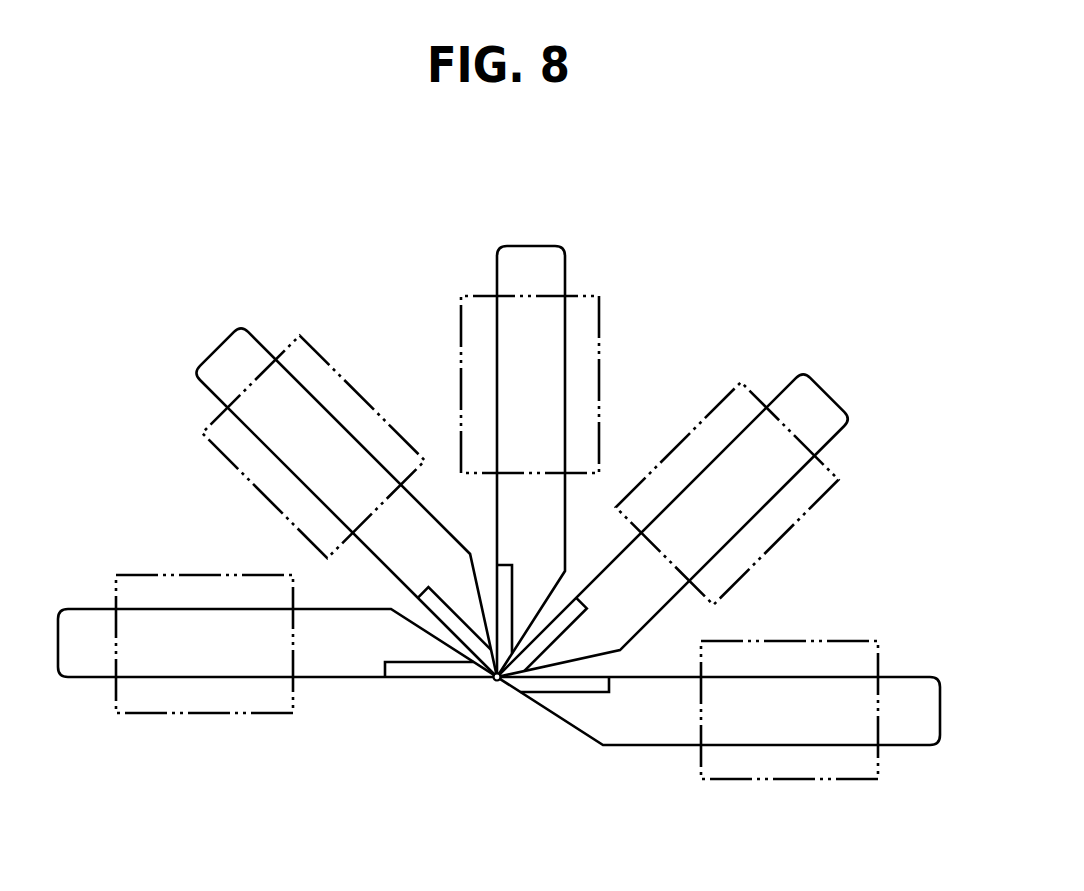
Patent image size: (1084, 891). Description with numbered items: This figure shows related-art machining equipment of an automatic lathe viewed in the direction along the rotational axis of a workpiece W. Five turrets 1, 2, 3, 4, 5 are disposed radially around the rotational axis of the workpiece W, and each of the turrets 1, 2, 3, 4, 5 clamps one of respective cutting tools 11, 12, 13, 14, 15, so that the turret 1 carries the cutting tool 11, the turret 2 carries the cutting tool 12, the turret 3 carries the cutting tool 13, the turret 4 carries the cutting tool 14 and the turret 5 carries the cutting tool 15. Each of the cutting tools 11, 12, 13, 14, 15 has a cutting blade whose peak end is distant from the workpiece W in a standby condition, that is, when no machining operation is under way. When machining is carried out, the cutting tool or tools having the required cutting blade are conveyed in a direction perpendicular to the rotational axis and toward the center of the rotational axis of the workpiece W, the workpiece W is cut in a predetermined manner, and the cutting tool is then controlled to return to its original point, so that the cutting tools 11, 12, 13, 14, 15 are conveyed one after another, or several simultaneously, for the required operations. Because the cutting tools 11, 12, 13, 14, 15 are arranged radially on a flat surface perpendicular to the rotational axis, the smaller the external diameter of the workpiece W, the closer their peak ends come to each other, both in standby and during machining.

The turret 1 is at (147, 715).
The turret 2 is at (220, 450).
The turret 3 is at (600, 327).
The turret 4 is at (818, 505).
The turret 5 is at (812, 782).
The cutting tool 11 is at (310, 680).
The cutting tool 12 is at (255, 338).
The cutting tool 13 is at (497, 277).
The cutting tool 14 is at (665, 508).
The cutting tool 15 is at (813, 677).
The workpiece W is at (498, 683).